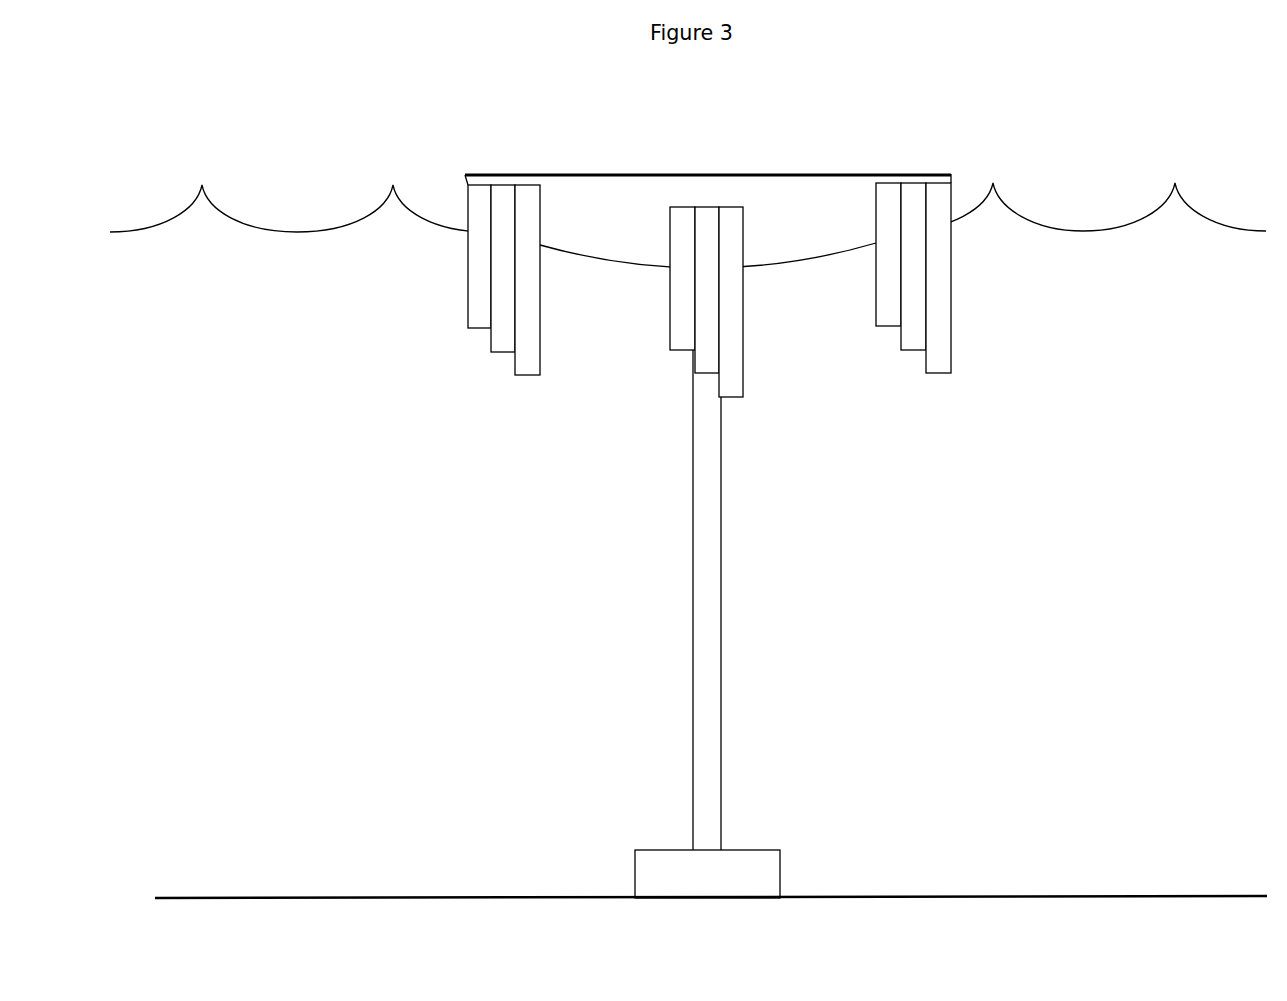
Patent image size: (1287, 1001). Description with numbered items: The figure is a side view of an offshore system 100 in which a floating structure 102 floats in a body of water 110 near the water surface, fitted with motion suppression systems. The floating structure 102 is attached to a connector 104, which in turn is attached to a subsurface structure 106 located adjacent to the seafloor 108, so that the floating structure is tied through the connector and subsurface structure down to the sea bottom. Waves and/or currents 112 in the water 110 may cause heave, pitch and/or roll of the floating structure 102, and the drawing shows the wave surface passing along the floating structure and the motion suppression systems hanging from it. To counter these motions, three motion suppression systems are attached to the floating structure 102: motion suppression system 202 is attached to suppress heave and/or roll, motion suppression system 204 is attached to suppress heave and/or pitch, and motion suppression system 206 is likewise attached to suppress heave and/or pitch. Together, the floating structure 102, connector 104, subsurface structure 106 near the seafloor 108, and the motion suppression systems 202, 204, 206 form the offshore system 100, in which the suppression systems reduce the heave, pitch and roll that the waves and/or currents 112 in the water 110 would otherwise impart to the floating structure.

The offshore system 100 is at (318, 105).
The floating structure 102 is at (857, 203).
The connector 104 is at (668, 588).
The subsurface structure 106 is at (726, 881).
The seafloor 108 is at (571, 921).
The body of water 110 is at (392, 348).
The waves and/or currents 112 is at (411, 234).
The motion suppression system 202 is at (688, 372).
The motion suppression system 204 is at (918, 372).
The motion suppression system 206 is at (507, 372).